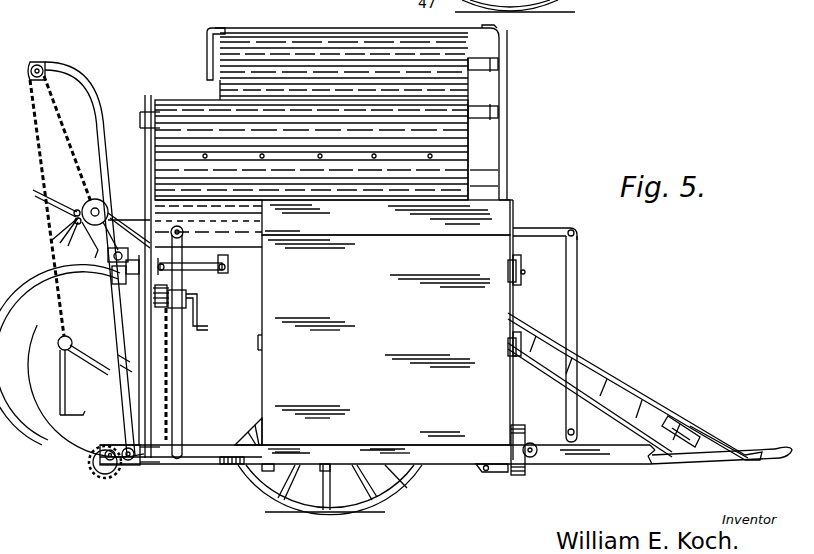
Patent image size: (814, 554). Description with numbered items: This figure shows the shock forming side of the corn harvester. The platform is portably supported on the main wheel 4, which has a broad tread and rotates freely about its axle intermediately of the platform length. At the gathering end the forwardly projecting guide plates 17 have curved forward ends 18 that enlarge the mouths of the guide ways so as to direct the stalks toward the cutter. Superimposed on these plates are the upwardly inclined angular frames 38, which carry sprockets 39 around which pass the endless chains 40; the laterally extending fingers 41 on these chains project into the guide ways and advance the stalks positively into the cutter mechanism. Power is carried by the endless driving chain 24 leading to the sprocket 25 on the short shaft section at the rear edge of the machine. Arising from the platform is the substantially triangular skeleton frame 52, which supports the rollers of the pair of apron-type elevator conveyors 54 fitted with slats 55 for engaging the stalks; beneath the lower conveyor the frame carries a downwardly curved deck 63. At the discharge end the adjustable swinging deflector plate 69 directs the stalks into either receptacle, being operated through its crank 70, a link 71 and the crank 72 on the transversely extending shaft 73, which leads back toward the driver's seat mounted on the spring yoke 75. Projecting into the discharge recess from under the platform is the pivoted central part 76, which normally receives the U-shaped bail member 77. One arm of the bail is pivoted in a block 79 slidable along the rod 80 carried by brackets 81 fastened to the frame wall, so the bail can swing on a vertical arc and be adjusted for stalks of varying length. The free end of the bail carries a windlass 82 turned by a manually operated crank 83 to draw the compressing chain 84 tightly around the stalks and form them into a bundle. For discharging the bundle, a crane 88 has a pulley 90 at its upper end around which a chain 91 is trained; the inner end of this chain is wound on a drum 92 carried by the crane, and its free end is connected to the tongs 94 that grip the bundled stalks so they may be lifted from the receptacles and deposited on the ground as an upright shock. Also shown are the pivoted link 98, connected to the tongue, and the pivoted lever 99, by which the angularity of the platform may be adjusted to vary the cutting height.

The main wheel 4 is at (398, 477).
The guide plates 17 is at (720, 460).
The curved forward ends 18 is at (764, 455).
The endless driving chain 24 is at (145, 478).
The sprocket 25 is at (110, 478).
The angular frames 38 is at (735, 441).
The sprockets 39 is at (700, 432).
The endless chains 40 is at (622, 390).
The fingers 41 is at (648, 404).
The skeleton frame 52 is at (505, 195).
The elevator conveyors 54 is at (447, 137).
The slats 55 is at (378, 94).
The downwardly curved deck 63 is at (470, 186).
The deflector plate 69 is at (493, 224).
The crank 70 is at (535, 340).
The link 71 is at (522, 284).
The crank 72 is at (510, 268).
The shaft 73 is at (128, 240).
The spring yoke 75 is at (58, 208).
The pivoted central part 76 is at (206, 468).
The bail member 77 is at (180, 446).
The block 79 is at (185, 261).
The rod 80 is at (196, 262).
The brackets 81 is at (228, 264).
The windlass 82 is at (172, 300).
The crank 83 is at (200, 322).
The compressing chain 84 is at (170, 370).
The crane 88 is at (98, 114).
The pulley 90 is at (40, 62).
The chain 91 is at (47, 198).
The drum 92 is at (108, 204).
The tongs 94 is at (68, 372).
The pivoted link 98 is at (577, 303).
The pivoted lever 99 is at (553, 233).